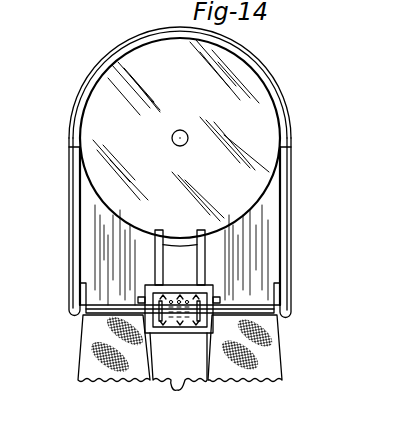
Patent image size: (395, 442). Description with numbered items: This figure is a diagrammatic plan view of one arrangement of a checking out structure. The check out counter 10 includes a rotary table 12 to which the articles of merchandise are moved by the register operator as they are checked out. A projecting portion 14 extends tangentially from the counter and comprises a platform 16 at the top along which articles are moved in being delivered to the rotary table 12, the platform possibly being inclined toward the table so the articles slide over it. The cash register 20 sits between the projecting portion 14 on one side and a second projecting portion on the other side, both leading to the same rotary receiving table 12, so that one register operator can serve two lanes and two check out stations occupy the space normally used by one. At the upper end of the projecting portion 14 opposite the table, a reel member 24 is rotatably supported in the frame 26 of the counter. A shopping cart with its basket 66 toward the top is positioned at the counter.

The check out counter 10 is at (283, 59).
The rotary table 12 is at (262, 80).
The projecting portion 14 is at (292, 292).
The platform 16 is at (118, 300).
The cash register 20 is at (176, 332).
The reel member 24 is at (100, 317).
The frame 26 is at (292, 240).
The basket 66 is at (177, 390).